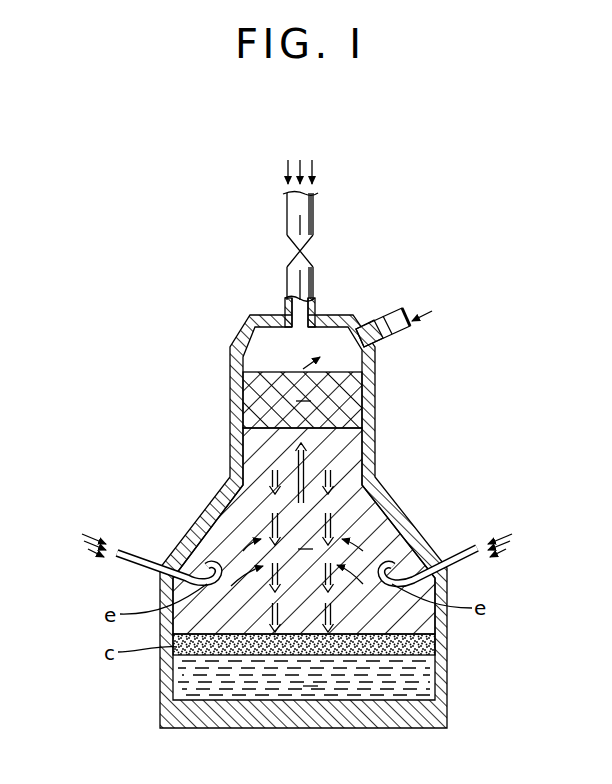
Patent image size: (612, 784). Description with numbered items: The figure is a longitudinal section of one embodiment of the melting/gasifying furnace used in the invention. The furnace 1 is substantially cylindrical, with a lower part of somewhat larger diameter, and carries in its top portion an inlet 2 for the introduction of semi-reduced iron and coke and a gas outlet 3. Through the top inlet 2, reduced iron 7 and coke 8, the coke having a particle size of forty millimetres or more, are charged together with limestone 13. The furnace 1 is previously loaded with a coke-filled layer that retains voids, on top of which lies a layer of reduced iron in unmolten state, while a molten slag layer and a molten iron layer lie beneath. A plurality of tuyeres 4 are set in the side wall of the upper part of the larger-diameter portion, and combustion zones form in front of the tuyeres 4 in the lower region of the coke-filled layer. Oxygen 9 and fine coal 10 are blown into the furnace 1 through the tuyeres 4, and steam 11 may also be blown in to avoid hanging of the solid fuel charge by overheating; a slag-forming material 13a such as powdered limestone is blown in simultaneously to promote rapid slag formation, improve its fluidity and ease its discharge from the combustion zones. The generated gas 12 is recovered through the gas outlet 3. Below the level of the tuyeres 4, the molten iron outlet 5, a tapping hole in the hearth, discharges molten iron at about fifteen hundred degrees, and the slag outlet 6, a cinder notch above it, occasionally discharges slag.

The furnace 1 is at (381, 416).
The inlet 2 is at (285, 215).
The gas outlet 3 is at (383, 322).
The tuyeres 4 is at (140, 556).
The molten iron outlet 5 is at (437, 678).
The slag outlet 6 is at (437, 653).
The reduced iron 7 is at (287, 160).
The coke 8 is at (312, 158).
The oxygen 9 is at (86, 547).
The fine coal 10 is at (82, 540).
The steam 11 is at (88, 531).
The generated gas 12 is at (432, 310).
The limestone 13 is at (300, 158).
The slag-forming material 13a is at (89, 553).